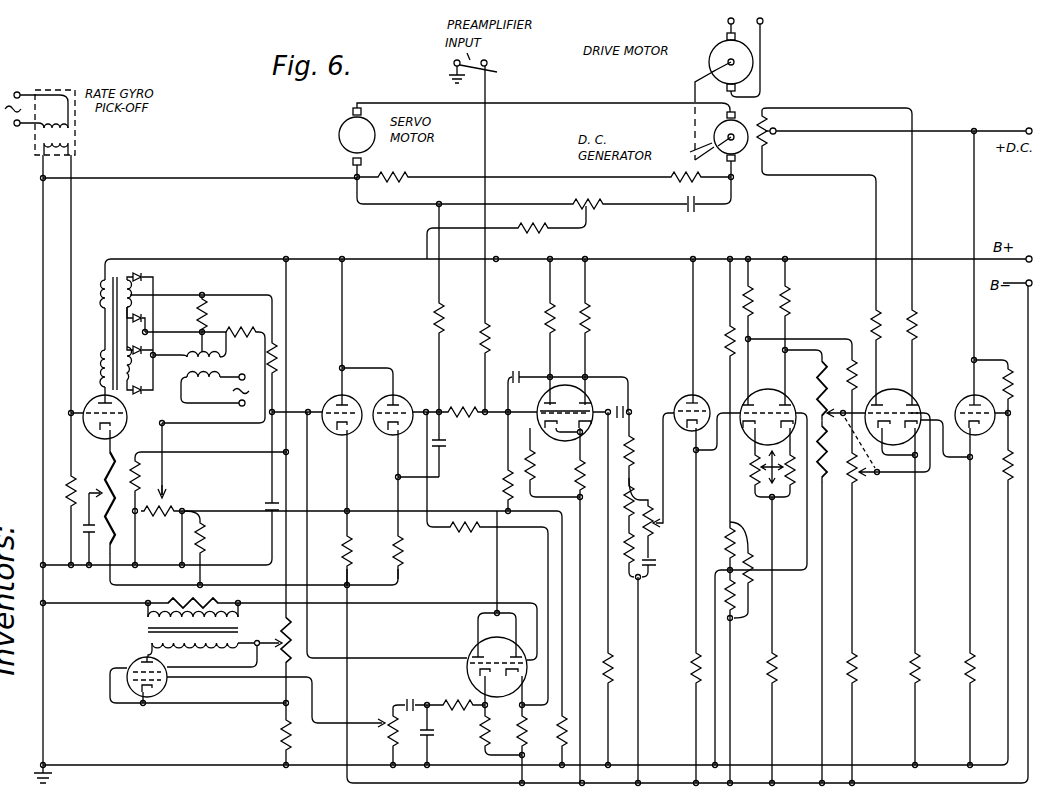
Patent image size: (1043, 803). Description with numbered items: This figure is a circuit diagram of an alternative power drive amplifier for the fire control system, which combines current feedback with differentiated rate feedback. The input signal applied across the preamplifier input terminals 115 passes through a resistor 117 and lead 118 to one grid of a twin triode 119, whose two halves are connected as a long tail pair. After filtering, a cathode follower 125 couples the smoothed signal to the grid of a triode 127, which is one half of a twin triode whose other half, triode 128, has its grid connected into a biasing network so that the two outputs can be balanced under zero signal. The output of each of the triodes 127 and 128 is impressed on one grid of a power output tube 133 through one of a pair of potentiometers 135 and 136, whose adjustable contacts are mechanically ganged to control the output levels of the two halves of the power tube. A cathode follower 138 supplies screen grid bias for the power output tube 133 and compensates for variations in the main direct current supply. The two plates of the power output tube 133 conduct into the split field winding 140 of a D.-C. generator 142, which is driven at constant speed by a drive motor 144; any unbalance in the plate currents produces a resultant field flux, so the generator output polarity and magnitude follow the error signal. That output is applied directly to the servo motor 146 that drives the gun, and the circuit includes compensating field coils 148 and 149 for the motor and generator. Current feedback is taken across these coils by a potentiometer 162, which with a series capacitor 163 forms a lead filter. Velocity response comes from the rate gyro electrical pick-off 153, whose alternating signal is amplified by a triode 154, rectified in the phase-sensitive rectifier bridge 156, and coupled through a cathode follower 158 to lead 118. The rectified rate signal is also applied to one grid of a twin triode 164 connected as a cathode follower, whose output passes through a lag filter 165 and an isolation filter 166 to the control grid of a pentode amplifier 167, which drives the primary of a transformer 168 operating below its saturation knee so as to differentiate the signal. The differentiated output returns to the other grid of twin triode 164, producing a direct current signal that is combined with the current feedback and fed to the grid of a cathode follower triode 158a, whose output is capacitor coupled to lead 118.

The preamplifier input terminals 115 is at (500, 70).
The resistor 117 is at (482, 340).
The lead 118 is at (483, 416).
The twin triode 119 is at (565, 388).
The cathode follower 125 is at (683, 400).
The triode 127 is at (757, 398).
The triode 128 is at (818, 380).
The power output tube 133 is at (893, 388).
The potentiometer 135 is at (826, 413).
The potentiometer 136 is at (858, 478).
The cathode follower 138 is at (962, 400).
The split field winding 140 is at (770, 137).
The D.-C. generator 142 is at (742, 158).
The drive motor 144 is at (716, 48).
The servo motor 146 is at (338, 135).
The compensating field coil 148 is at (400, 185).
The compensating field coil 149 is at (673, 183).
The electrical pick-off 153 is at (75, 135).
The triode 154 is at (118, 427).
The phase-sensitive rectifier bridge 156 is at (190, 326).
The cathode follower 158 is at (330, 402).
The triode 158a is at (400, 392).
The potentiometer 162 is at (587, 211).
The capacitor 163 is at (695, 212).
The twin triode 164 is at (475, 652).
The lag filter 165 is at (470, 736).
The isolation filter 166 is at (398, 708).
The pentode amplifier 167 is at (166, 685).
The transformer 168 is at (218, 668).